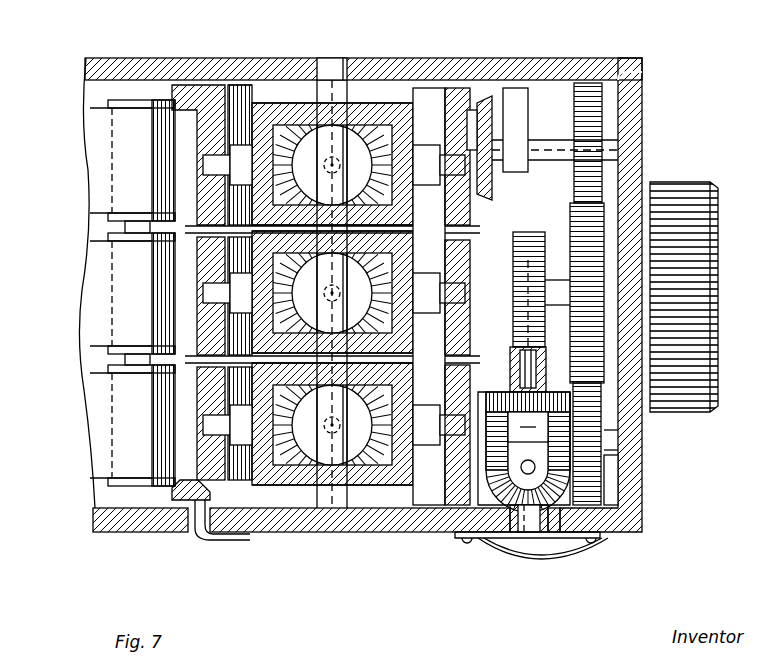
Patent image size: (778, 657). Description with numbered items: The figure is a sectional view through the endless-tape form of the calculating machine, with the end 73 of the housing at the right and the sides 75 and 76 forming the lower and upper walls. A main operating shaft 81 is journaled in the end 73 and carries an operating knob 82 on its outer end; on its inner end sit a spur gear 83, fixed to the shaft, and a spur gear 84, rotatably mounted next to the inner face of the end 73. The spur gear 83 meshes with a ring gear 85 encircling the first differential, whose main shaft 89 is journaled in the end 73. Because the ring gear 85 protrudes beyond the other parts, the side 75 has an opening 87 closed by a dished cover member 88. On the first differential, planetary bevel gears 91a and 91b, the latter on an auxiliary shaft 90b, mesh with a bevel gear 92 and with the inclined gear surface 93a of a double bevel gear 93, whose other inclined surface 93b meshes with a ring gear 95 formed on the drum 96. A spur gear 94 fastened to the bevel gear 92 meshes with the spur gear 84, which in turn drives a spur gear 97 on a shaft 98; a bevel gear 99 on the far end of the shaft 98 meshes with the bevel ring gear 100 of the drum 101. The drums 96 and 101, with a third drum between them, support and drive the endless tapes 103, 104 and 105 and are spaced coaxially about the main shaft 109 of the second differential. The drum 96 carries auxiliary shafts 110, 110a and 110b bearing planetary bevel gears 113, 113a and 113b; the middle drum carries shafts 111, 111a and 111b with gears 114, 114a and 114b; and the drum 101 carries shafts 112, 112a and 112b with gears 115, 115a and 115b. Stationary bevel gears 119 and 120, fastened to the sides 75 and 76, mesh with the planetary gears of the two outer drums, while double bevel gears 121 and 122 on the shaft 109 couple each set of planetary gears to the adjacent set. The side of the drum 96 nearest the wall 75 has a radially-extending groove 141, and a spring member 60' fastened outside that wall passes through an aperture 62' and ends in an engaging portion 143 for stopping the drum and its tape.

The side 76 is at (193, 58).
The end 73 is at (640, 110).
The side 75 is at (93, 522).
The endless tape 105 is at (100, 168).
The endless tape 104 is at (90, 294).
The auxiliary shaft 110 is at (195, 455).
The endless tape 103 is at (100, 410).
The planetary bevel gear 115 is at (200, 205).
The planetary bevel gear 115a is at (300, 103).
The planetary bevel gear 115b is at (400, 80).
The stationary bevel gear 120 is at (370, 103).
The main shaft of second differential 109 is at (328, 62).
The auxiliary shaft 112 is at (215, 178).
The auxiliary shaft 111 is at (200, 300).
The double bevel gear 122 is at (200, 250).
The planetary bevel gear 114 is at (160, 388).
The double bevel gear 121 is at (240, 392).
The auxiliary shaft 112a is at (332, 164).
The planetary bevel gear 114a is at (332, 292).
The auxiliary shaft 111a is at (337, 314).
The auxiliary shaft 110a is at (332, 424).
The auxiliary shaft 112b is at (436, 206).
The planetary bevel gear 114b is at (350, 243).
The auxiliary shaft 111b is at (467, 290).
The auxiliary shaft 90b is at (346, 343).
The planetary bevel gear 91b is at (477, 296).
The drum 101 is at (430, 88).
The bevel ring gear 100 is at (485, 100).
The bevel gear 99 is at (480, 112).
The shaft 98 is at (548, 140).
The spur gear 97 is at (590, 90).
The spur gear 84 is at (604, 212).
The spur gear 94 is at (600, 415).
The main shaft of first differential 89 is at (630, 442).
The planetary bevel gear 91a is at (606, 462).
The operating knob 82 is at (718, 194).
The spur gear 83 is at (530, 232).
The main operating shaft 81 is at (556, 282).
The ring gear 85 is at (545, 358).
The double bevel gear 93 is at (480, 500).
The inclined gear surface 93a is at (528, 434).
The inclined gear surface 93b is at (475, 510).
The opening 87 is at (528, 548).
The ring gear 95 is at (482, 532).
The drum 96 is at (490, 538).
The dished cover member 88 is at (565, 548).
The bevel gear 92 is at (585, 538).
The tube 60' is at (222, 538).
The aperture 62' is at (167, 547).
The engaging portion 143 is at (150, 520).
The radially-extending groove 141 is at (172, 496).
The planetary bevel gear 113 is at (275, 505).
The planetary bevel gear 113a is at (292, 505).
The stationary bevel gear 119 is at (300, 500).
The planetary bevel gear 113b is at (370, 500).
The auxiliary shaft 110b is at (400, 500).